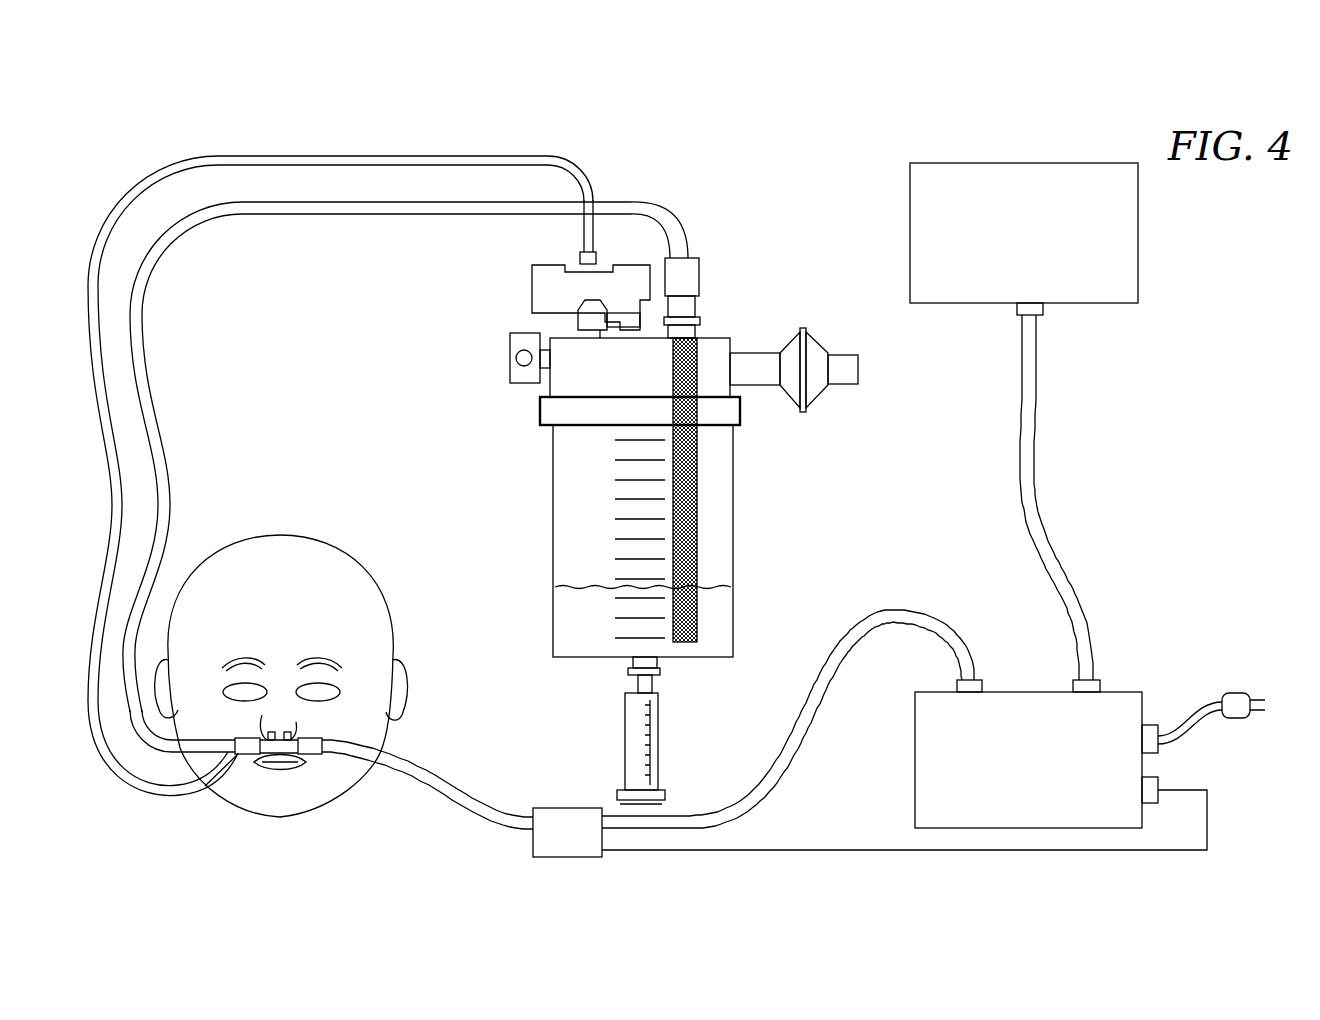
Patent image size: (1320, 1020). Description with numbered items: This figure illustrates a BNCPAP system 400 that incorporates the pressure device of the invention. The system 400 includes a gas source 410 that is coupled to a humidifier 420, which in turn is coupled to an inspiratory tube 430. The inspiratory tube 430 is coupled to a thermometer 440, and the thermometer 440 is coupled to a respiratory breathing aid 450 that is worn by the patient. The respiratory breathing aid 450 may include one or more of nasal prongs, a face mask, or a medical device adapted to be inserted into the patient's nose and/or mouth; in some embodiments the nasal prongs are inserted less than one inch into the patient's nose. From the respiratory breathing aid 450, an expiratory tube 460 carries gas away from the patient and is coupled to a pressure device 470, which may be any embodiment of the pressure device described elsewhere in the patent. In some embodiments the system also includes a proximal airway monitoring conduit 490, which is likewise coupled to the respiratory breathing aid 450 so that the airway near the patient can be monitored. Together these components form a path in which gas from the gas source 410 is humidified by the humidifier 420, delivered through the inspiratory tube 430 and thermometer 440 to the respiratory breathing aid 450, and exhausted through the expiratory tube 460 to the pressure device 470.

The system 400 is at (688, 51).
The gas source 410 is at (910, 213).
The humidifier 420 is at (915, 788).
The inspiratory tube 430 is at (812, 708).
The thermometer 440 is at (556, 808).
The respiratory breathing aid 450 is at (318, 760).
The expiratory tube 460 is at (145, 318).
The pressure device 470 is at (478, 423).
The proximal airway monitoring conduit 490 is at (163, 790).